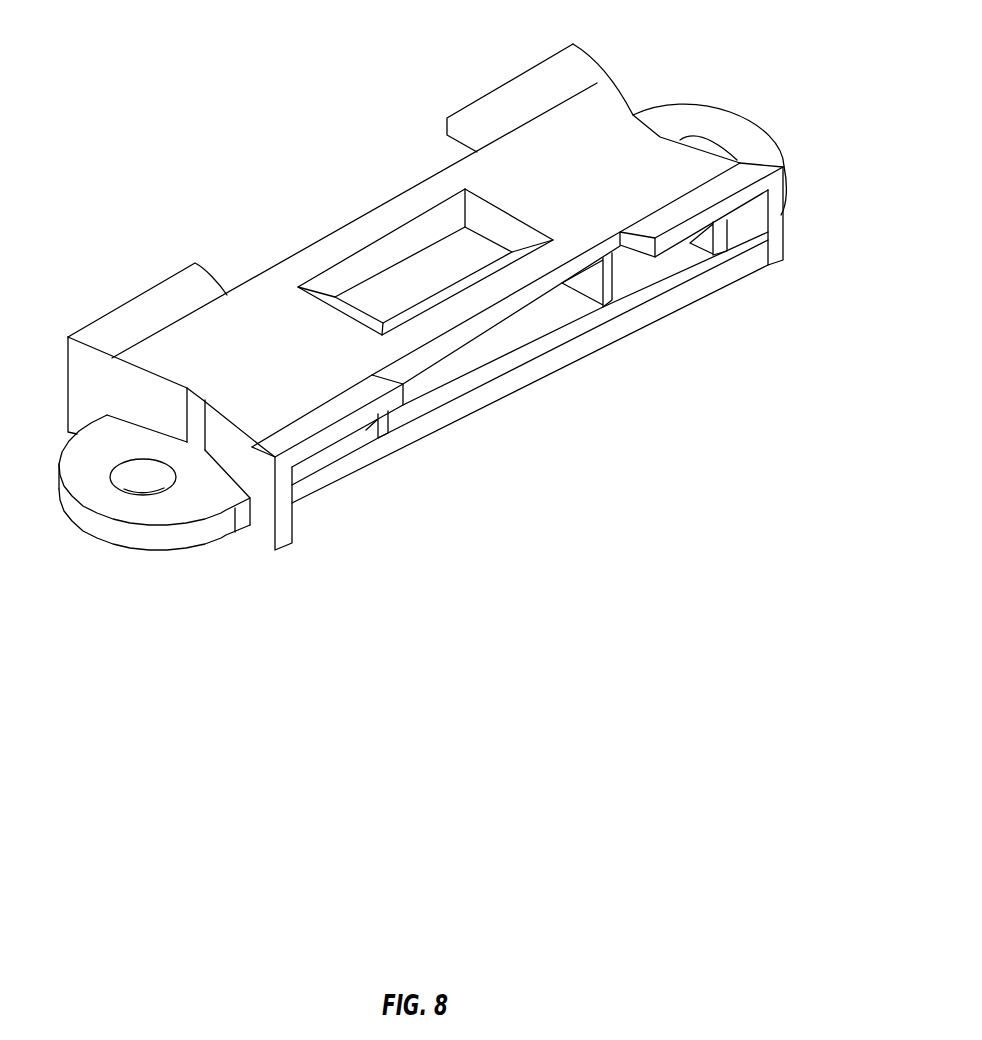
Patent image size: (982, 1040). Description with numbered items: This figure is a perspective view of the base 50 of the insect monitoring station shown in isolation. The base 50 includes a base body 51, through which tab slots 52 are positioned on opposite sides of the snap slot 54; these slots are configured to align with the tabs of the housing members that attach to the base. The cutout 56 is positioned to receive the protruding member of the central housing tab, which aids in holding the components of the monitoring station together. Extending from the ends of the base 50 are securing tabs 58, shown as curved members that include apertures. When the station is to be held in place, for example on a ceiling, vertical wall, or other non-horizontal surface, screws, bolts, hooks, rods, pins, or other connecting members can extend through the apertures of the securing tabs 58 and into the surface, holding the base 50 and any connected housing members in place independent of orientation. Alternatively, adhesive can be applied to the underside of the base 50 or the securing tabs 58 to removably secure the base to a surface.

The base 50 is at (217, 188).
The base body 51 is at (135, 312).
The tab slots 52 is at (640, 262).
The snap slot 54 is at (485, 352).
The cutout 56 is at (421, 275).
The securing tabs 58 is at (88, 467).